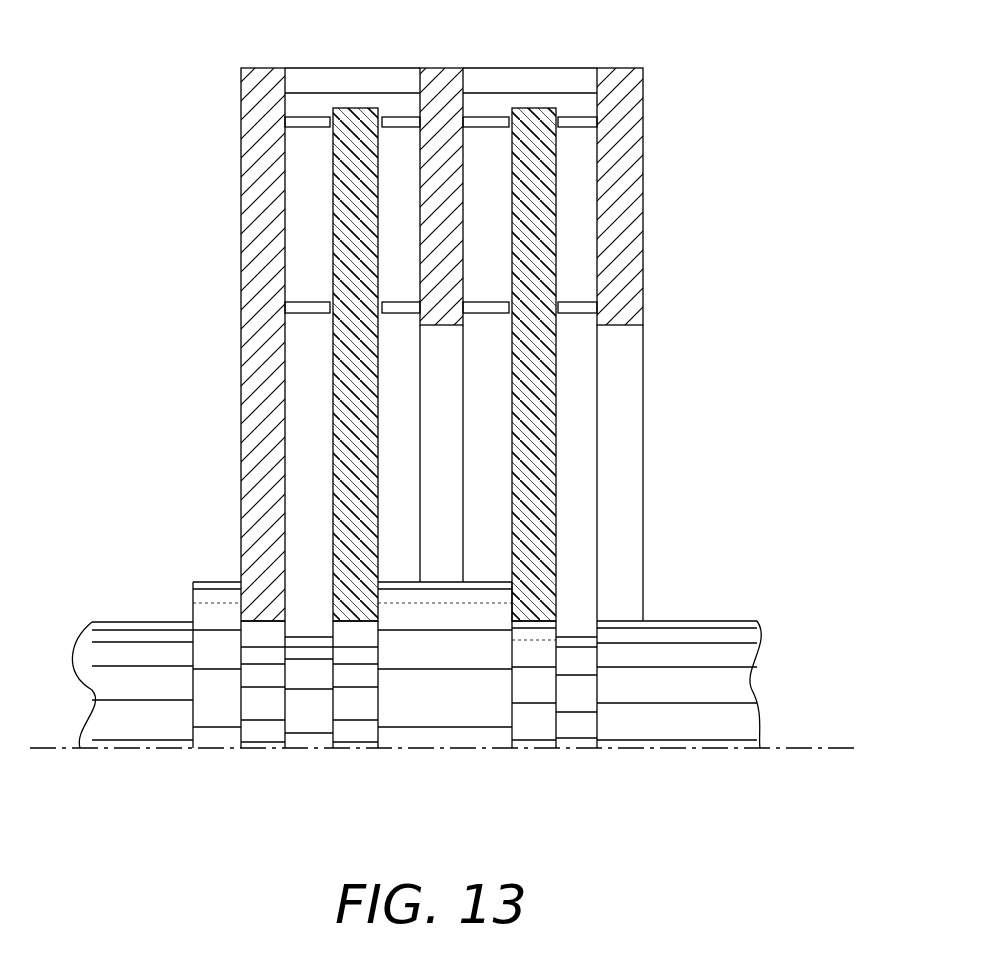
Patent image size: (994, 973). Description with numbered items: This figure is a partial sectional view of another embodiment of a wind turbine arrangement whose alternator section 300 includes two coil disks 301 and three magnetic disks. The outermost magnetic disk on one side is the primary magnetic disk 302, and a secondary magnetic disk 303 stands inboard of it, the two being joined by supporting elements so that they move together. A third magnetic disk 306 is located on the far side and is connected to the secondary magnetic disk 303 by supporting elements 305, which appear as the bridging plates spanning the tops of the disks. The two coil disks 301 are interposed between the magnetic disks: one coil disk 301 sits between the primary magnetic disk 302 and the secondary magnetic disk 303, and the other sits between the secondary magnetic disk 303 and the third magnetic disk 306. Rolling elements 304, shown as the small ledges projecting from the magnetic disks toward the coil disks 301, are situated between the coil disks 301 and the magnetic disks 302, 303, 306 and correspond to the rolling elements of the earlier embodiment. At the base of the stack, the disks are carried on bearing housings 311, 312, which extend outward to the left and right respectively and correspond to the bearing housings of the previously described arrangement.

The alternator section 300 is at (200, 68).
The coil disks 301 is at (333, 462).
The primary magnetic disk 302 is at (241, 402).
The secondary magnetic disk 303 is at (455, 68).
The rolling elements 304 is at (393, 118).
The supporting elements 305 is at (349, 68).
The third magnetic disk 306 is at (643, 68).
The bearing housing 311 is at (128, 620).
The bearing housing 312 is at (728, 620).